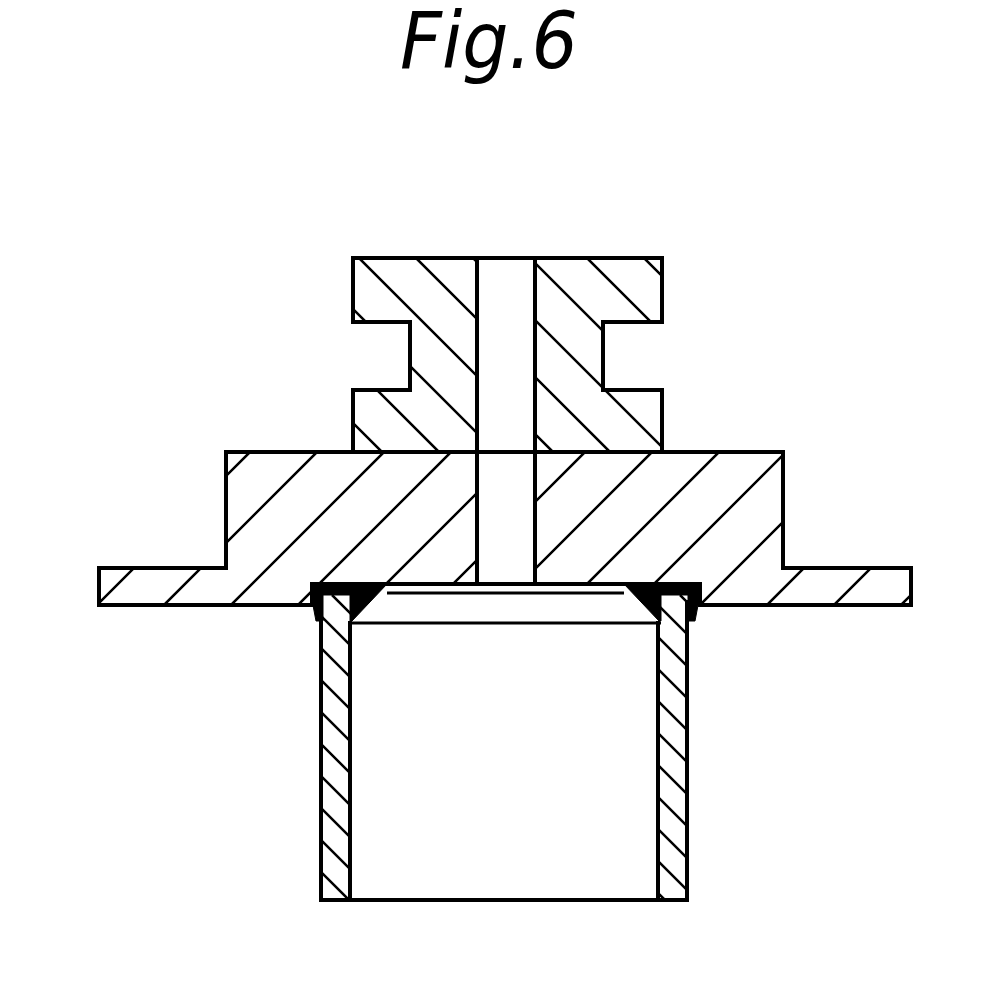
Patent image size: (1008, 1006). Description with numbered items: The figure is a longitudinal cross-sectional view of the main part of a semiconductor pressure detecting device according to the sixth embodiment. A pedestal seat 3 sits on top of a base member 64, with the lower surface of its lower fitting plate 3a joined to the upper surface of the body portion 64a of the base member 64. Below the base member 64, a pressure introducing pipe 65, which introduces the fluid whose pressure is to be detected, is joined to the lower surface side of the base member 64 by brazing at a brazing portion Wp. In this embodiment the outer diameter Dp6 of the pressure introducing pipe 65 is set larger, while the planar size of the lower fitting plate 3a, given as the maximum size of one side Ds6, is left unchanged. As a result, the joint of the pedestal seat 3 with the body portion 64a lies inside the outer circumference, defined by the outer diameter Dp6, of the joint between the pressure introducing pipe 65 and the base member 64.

The pedestal seat 3 is at (667, 287).
The lower fitting plate 3a is at (352, 415).
The maximum size of one side of the lower fitting plate Ds6 is at (353, 337).
The base member 64 is at (747, 453).
The body portion of the base member 64a is at (225, 512).
The brazing portion Wp is at (307, 615).
The pressure introducing pipe 65 is at (690, 747).
The outer diameter of the pressure introducing pipe Dp6 is at (687, 988).